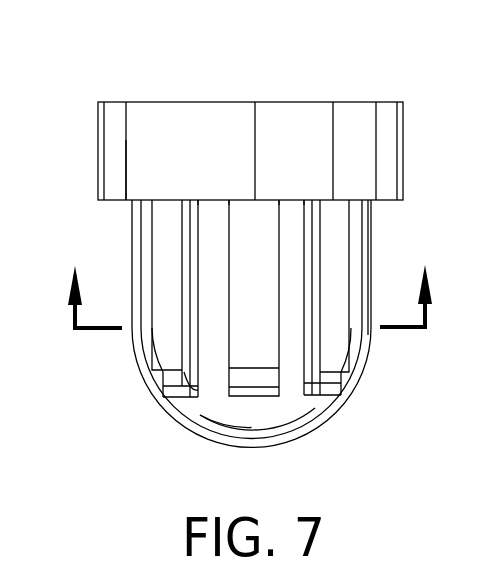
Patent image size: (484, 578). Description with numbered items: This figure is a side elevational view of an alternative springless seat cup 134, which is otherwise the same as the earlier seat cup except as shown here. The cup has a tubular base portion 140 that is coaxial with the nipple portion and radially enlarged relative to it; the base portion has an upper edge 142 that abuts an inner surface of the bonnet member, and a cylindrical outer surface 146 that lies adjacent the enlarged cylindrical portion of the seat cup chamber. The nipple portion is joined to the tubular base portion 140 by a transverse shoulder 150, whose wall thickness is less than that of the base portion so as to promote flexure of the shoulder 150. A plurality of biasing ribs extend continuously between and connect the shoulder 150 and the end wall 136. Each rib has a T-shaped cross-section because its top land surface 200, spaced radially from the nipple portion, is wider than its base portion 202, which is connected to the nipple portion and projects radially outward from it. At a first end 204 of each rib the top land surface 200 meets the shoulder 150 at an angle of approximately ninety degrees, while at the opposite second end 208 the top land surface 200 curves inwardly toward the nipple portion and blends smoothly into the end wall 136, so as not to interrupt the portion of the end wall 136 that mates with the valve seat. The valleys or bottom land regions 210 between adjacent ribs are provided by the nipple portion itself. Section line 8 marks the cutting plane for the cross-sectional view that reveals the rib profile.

The section line 8- 8 is at (249, 285).
The springless seat cup 134 is at (166, 96).
The end wall 136 is at (217, 447).
The tubular base portion 140 is at (94, 139).
The upper edge 142 is at (332, 100).
The cylindrical outer surface 146 is at (182, 161).
The transverse shoulder 150 is at (292, 207).
The top land surface 200 is at (167, 354).
The base portion 202 is at (200, 352).
The first end 204 is at (261, 207).
The second end 208 is at (258, 390).
The bottom land regions 210 is at (301, 251).